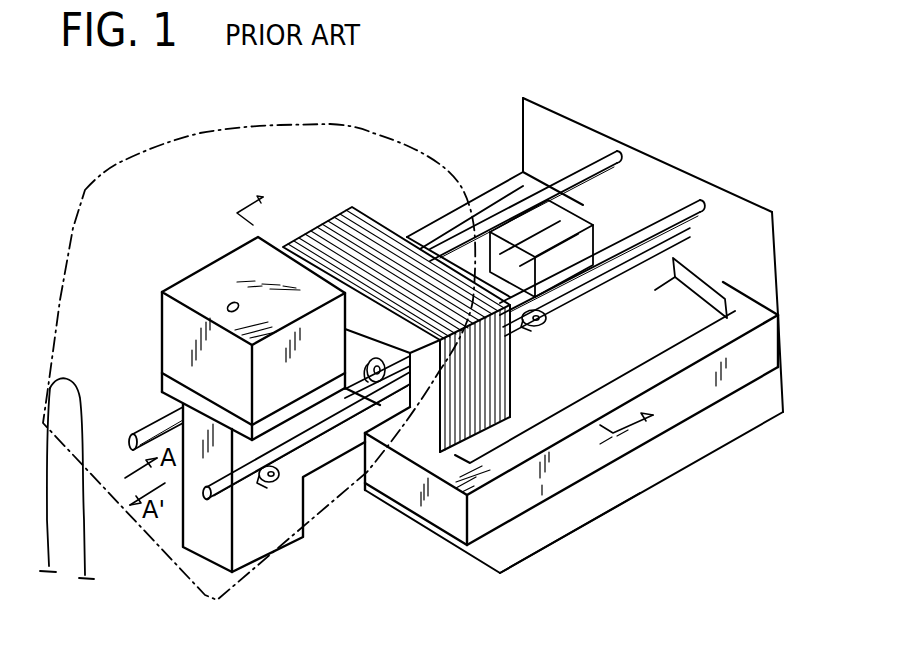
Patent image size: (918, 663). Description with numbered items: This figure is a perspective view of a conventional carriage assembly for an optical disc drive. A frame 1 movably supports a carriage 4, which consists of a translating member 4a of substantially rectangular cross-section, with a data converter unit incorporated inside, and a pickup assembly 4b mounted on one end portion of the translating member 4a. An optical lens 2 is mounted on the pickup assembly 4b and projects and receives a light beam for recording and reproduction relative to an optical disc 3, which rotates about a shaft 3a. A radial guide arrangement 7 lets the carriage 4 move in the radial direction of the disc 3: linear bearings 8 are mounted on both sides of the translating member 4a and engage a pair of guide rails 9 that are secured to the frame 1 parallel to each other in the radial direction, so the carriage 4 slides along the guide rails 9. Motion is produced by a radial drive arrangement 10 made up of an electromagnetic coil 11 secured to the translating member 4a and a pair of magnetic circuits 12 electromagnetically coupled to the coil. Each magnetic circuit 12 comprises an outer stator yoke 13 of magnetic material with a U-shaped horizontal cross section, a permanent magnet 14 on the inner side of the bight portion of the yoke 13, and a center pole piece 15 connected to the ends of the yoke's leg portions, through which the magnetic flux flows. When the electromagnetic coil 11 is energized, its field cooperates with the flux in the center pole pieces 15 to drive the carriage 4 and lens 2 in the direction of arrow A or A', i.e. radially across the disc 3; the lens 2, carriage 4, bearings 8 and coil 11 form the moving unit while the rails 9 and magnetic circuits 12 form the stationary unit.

The frame 1 is at (538, 123).
The optical lens 2 is at (228, 300).
The optical disc 3 is at (125, 160).
The shaft 3a is at (90, 575).
The carriage 4 is at (273, 547).
The translating member 4a is at (208, 533).
The pickup assembly 4b is at (225, 265).
The radial guide arrangement 7 is at (625, 156).
The linear bearings 8 is at (367, 368).
The guide rails 9 is at (618, 150).
The radial drive arrangement 10 is at (385, 224).
The electromagnetic coil 11 is at (322, 228).
The magnetic circuits 12 is at (573, 490).
The outer stator yoke 13 is at (480, 202).
The permanent magnet 14 is at (575, 215).
The center pole piece 15 is at (580, 243).